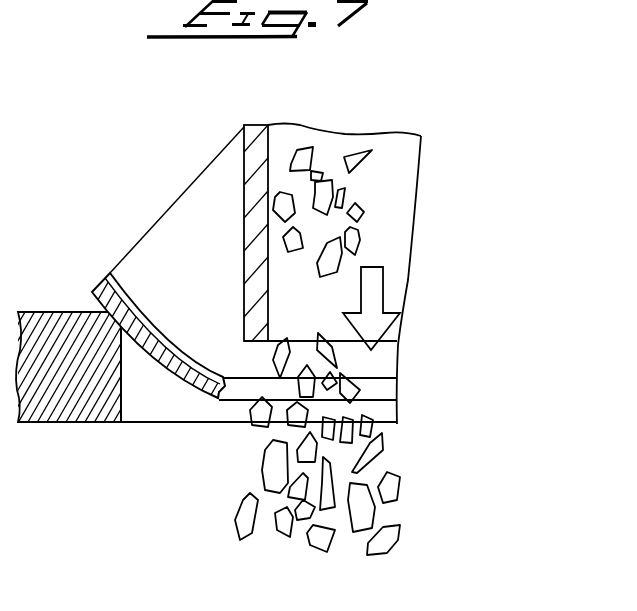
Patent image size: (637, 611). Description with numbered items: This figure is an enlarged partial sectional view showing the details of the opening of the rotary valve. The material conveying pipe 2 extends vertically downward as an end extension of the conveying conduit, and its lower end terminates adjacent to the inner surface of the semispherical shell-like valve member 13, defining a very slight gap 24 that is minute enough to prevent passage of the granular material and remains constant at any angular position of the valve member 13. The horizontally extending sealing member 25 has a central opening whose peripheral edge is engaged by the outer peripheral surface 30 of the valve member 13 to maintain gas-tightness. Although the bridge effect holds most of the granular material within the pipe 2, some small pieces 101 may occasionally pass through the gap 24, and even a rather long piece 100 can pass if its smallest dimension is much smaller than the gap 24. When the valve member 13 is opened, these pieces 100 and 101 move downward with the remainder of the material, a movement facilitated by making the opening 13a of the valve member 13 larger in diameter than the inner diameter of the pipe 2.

The material conveying pipe 2 is at (243, 216).
The gap 24 is at (243, 374).
The sealing member 25 is at (68, 311).
The outer peripheral surface 30 is at (176, 373).
The valve member 13 is at (179, 405).
The opening 13a is at (216, 423).
The pieces of granular material 101 is at (260, 420).
The long piece of granular material 100 is at (262, 470).